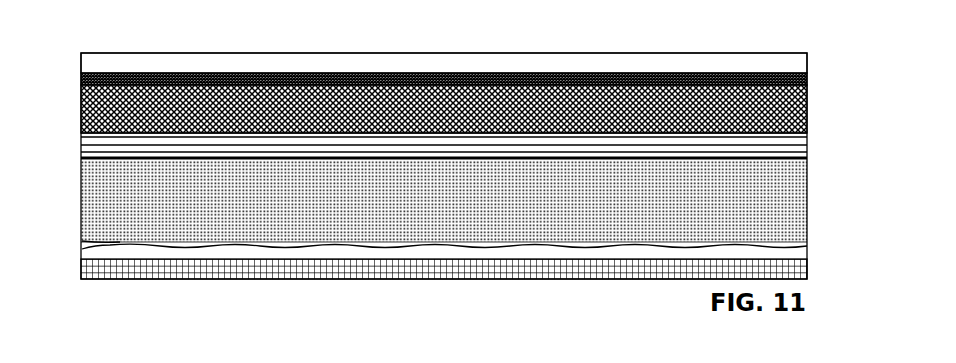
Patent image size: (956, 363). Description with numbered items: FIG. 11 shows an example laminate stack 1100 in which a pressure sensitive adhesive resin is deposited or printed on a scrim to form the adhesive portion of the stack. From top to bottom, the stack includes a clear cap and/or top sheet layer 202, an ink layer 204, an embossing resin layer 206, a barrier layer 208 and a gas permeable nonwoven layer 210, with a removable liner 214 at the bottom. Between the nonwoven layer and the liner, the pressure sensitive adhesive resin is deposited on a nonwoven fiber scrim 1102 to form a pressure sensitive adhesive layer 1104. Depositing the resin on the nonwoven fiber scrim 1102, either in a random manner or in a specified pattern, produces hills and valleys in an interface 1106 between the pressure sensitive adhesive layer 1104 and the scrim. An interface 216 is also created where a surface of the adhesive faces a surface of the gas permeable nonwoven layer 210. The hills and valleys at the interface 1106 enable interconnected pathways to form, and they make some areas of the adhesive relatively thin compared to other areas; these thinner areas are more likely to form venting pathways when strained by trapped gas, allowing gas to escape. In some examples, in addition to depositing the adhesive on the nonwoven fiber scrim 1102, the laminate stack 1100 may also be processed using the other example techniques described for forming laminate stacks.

The laminate stack 1100 is at (166, 28).
The clear cap and/or top sheet layer 202 is at (833, 57).
The ink layer 204 is at (808, 77).
The embossing resin layer 206 is at (808, 113).
The barrier layer 208 is at (808, 152).
The gas permeable nonwoven layer 210 is at (808, 220).
The pressure sensitive adhesive layer 1104 is at (833, 244).
The interface 1106 is at (82, 249).
The nonwoven fiber scrim 1102 is at (82, 241).
The interface 216 is at (104, 236).
The removable liner 214 is at (808, 265).